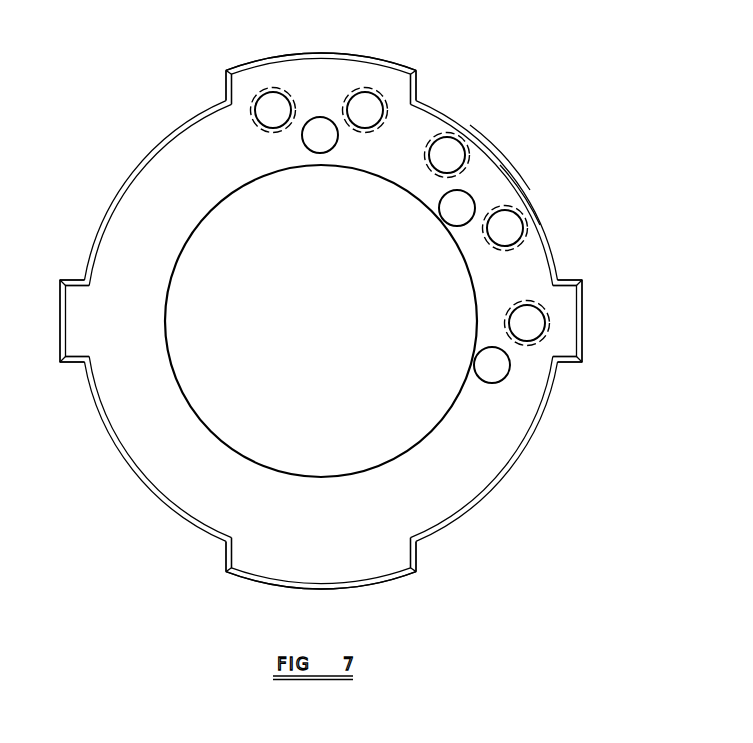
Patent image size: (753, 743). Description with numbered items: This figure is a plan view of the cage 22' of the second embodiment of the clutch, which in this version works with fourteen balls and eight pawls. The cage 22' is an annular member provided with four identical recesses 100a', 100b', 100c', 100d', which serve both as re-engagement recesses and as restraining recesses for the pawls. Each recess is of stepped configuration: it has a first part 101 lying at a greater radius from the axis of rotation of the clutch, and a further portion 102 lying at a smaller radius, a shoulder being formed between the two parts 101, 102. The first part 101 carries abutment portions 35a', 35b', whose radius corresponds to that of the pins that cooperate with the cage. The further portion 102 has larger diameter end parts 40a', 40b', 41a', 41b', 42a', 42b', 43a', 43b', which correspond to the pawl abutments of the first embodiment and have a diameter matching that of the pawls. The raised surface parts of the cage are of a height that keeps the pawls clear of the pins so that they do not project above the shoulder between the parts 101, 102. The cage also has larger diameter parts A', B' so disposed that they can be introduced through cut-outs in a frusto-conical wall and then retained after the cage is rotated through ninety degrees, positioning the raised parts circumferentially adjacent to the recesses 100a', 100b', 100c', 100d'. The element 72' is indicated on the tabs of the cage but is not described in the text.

The cage 22' is at (320, 321).
The abutment portion 35a' is at (322, 320).
The abutment portion 35b' is at (331, 320).
The larger diameter end part 40a' is at (442, 53).
The larger diameter end part 40b' is at (604, 280).
The larger diameter end part 41a' is at (603, 360).
The larger diameter end part 41b' is at (442, 592).
The larger diameter end part 42a' is at (216, 591).
The larger diameter end part 42b' is at (44, 366).
The larger diameter end part 43a' is at (44, 273).
The larger diameter end part 43b' is at (207, 51).
The mounting tab 72' is at (322, 305).
The recess 100a' is at (497, 193).
The recess 100b' is at (484, 449).
The recess 100c' is at (158, 449).
The recess 100d' is at (142, 193).
The first part 101 is at (540, 218).
The further portion 102 is at (503, 172).
The larger diameter part A' is at (324, 321).
The larger diameter part B' is at (321, 322).